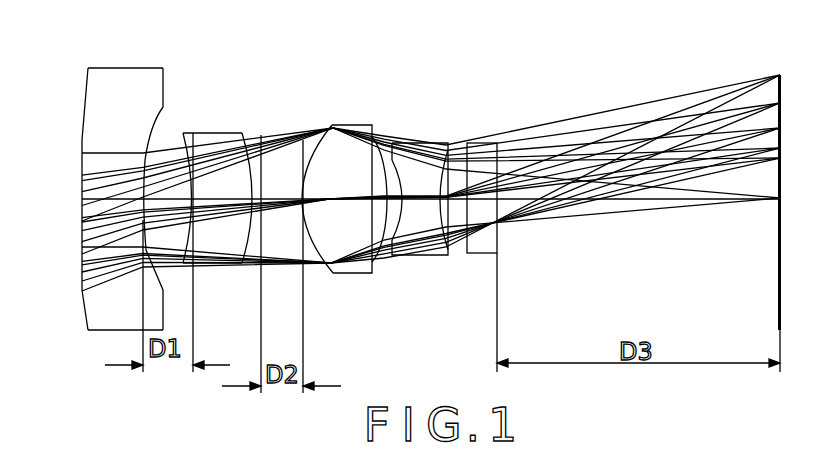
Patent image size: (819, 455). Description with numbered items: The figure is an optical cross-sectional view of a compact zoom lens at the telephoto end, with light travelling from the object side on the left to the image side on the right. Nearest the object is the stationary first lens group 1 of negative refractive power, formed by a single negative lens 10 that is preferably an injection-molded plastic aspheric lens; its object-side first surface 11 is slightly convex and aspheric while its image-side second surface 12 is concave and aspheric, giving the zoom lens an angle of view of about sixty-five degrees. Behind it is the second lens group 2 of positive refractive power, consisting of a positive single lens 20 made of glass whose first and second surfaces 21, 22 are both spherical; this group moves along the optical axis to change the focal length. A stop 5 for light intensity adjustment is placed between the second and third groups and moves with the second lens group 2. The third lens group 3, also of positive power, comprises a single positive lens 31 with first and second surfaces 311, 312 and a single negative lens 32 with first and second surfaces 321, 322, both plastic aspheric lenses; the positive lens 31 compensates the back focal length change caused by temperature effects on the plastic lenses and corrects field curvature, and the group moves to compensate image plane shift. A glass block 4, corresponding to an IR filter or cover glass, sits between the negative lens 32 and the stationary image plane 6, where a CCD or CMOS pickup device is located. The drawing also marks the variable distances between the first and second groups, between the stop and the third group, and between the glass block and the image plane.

The first lens group 1 is at (99, 170).
The single negative lens 10 is at (99, 176).
The first surface of the single negative lens 11 is at (82, 210).
The second surface of the single negative lens 12 is at (153, 130).
The second lens group 2 is at (147, 191).
The positive single lens 20 is at (147, 197).
The first surface of the positive single lens 21 is at (187, 237).
The second surface of the positive single lens 22 is at (251, 178).
The stop 5 is at (263, 237).
The third lens group 3 is at (426, 190).
The single positive lens 31 is at (375, 237).
The first surface of the single positive lens 311 is at (295, 235).
The second surface of the single positive lens 312 is at (385, 212).
The single negative lens 32 is at (470, 162).
The first surface of the single negative lens 321 is at (393, 168).
The second surface of the single negative lens 322 is at (446, 158).
The glass block 4 is at (482, 256).
The image plane 6 is at (780, 235).